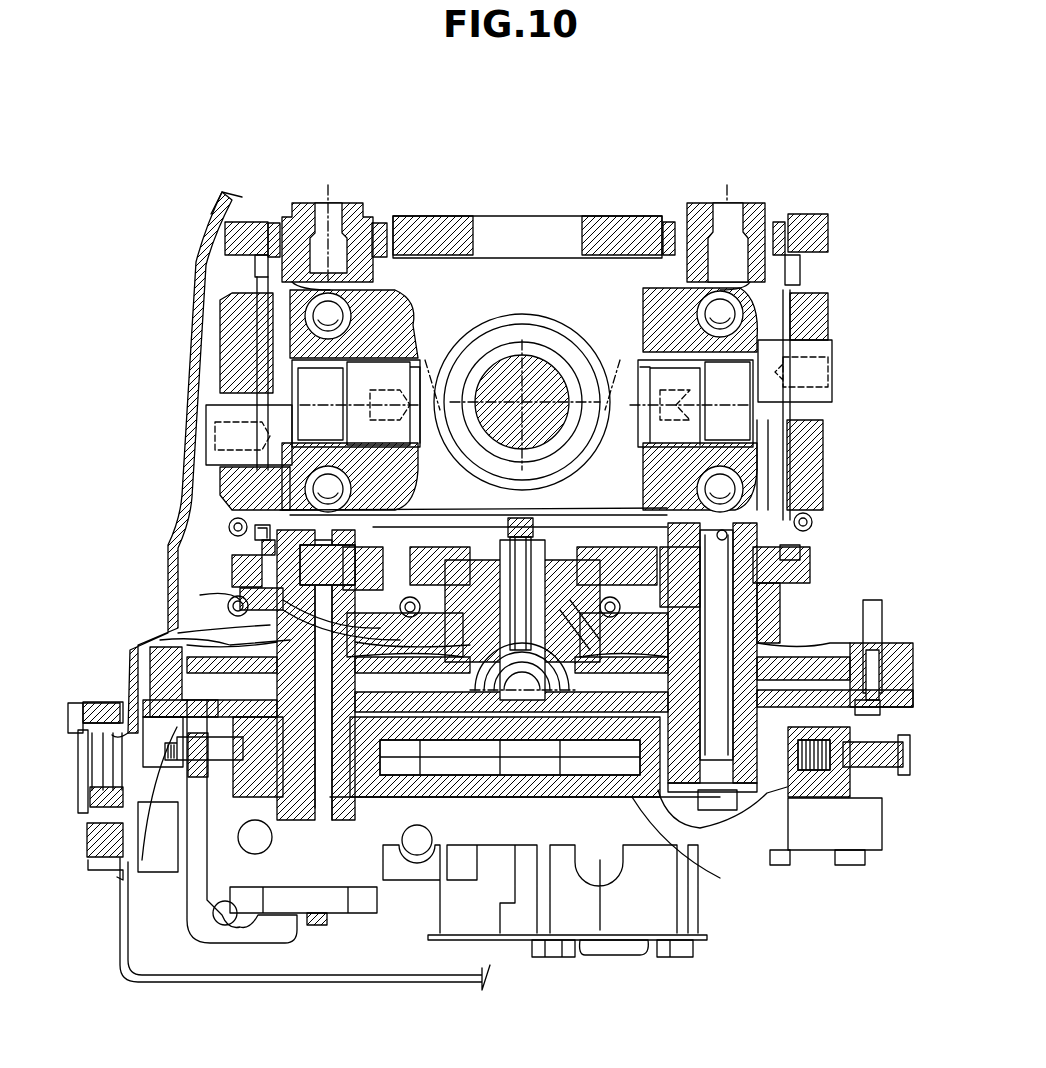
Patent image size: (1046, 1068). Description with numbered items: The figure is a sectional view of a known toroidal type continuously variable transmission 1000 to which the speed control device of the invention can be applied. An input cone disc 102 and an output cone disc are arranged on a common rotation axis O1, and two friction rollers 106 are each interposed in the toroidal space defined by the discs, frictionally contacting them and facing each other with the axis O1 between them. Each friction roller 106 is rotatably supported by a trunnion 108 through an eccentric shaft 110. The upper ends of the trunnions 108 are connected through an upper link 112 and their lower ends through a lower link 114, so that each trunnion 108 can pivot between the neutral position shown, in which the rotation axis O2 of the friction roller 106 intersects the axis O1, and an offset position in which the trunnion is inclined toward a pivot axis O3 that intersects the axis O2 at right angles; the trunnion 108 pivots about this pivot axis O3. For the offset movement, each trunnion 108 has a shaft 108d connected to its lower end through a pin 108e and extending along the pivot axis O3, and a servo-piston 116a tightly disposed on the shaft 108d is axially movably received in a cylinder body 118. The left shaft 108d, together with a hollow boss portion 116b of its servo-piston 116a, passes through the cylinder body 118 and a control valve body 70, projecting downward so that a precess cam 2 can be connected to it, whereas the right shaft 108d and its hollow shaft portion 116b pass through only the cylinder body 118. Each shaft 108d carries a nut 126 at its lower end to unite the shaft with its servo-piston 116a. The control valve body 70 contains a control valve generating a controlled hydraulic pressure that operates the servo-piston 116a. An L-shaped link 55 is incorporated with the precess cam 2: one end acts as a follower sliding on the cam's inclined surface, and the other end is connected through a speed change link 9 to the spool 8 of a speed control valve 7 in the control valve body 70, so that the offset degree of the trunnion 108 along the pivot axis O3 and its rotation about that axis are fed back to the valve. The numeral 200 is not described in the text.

The toroidal type continuously variable transmission 1000 is at (725, 98).
The upper link 112 is at (248, 205).
The input cone disc 102 is at (405, 216).
The pivot axis O3 is at (330, 188).
The friction roller 106 is at (413, 293).
The trunnion 108 is at (226, 326).
The eccentric shaft 110 is at (410, 443).
The rotation axis O1 is at (522, 385).
The rotation axis O2 is at (430, 360).
The pin 108e is at (250, 503).
The lower link 114 is at (240, 560).
The shaft 108d is at (200, 600).
The hollow boss portion 116b is at (268, 627).
The servo-piston 116a is at (160, 643).
The cylinder body 118 is at (290, 688).
The speed change link 9 is at (118, 870).
The spool 8 is at (407, 797).
The precess cam 2 is at (350, 908).
The speed control valve 7 is at (633, 797).
The nut 126 is at (733, 800).
The control valve body 70 is at (857, 777).
The L-shaped link 55 is at (242, 960).
The bolt 200 is at (300, 920).